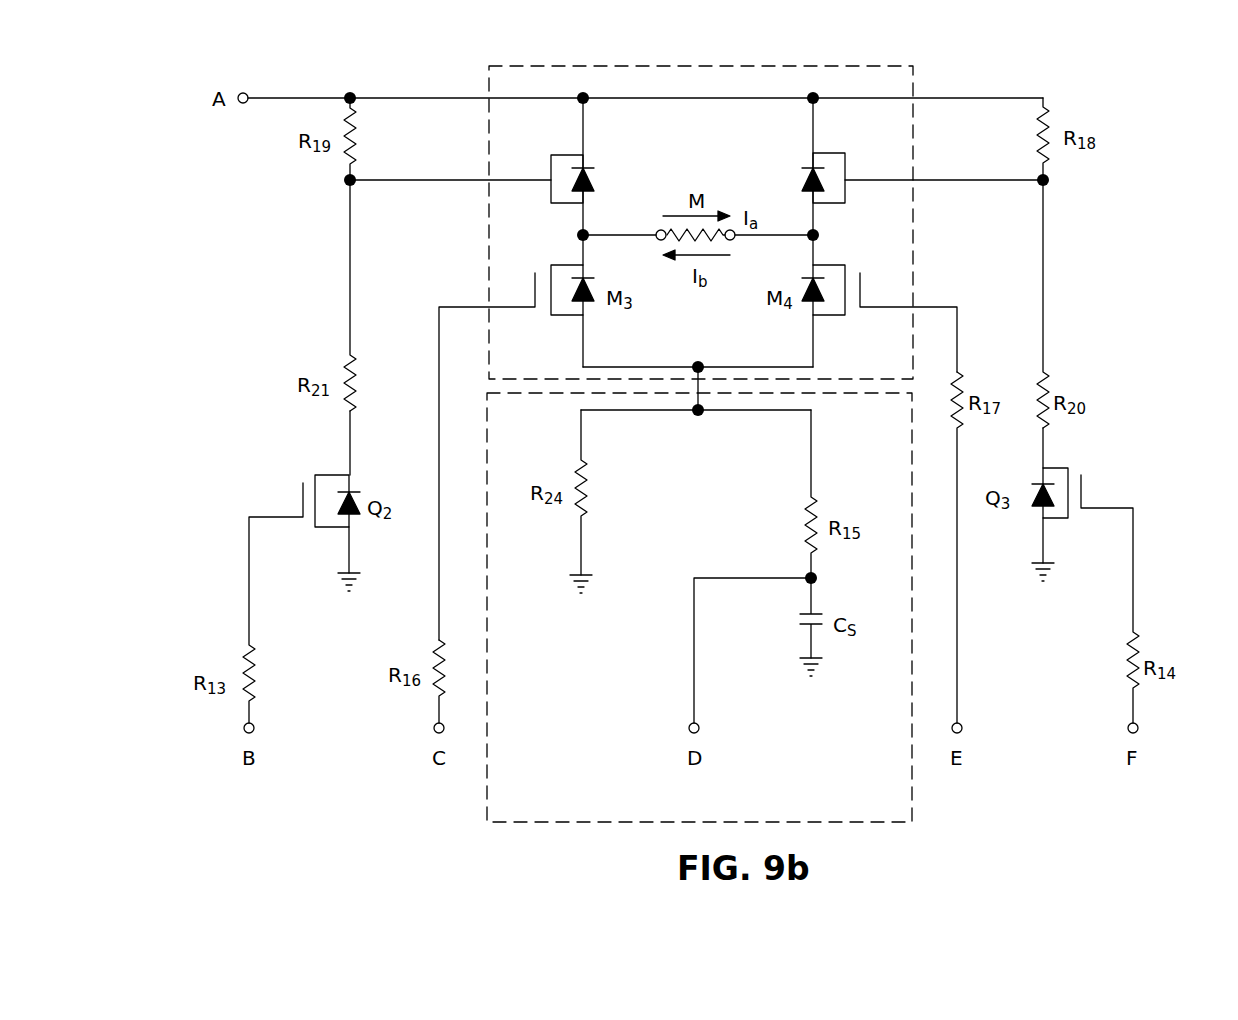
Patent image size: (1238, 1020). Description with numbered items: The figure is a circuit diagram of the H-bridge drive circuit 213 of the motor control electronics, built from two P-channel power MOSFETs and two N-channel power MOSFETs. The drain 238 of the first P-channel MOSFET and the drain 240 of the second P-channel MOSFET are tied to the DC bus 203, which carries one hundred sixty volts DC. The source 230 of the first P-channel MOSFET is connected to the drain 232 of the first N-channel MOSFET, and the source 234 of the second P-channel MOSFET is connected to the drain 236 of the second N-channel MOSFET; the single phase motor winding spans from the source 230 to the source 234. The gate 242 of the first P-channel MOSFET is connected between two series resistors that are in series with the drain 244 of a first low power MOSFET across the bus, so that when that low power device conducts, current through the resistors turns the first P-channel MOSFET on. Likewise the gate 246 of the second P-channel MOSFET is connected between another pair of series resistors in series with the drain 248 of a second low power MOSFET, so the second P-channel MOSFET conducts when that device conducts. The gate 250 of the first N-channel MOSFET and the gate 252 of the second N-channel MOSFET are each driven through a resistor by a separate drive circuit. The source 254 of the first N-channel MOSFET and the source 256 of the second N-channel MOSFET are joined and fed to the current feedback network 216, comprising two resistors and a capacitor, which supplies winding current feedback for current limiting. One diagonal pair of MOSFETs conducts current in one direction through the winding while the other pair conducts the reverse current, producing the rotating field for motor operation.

The DC bus 203 is at (288, 97).
The H-bridge drive circuit 213 is at (913, 84).
The current feedback network 216 is at (487, 776).
The source of M1 230 is at (583, 222).
The drain of M3 232 is at (583, 256).
The source of M2 234 is at (813, 222).
The drain of M4 236 is at (813, 258).
The drain of M1 238 is at (606, 166).
The drain of M2 240 is at (813, 135).
The gate of M1 242 is at (507, 180).
The drain of low power MOSFET Q2 244 is at (349, 437).
The gate of M2 246 is at (953, 180).
The drain of low power MOSFET Q3 248 is at (1043, 445).
The gate of M3 250 is at (457, 307).
The gate of M4 252 is at (935, 307).
The source of M3 254 is at (583, 333).
The source of M4 256 is at (813, 333).